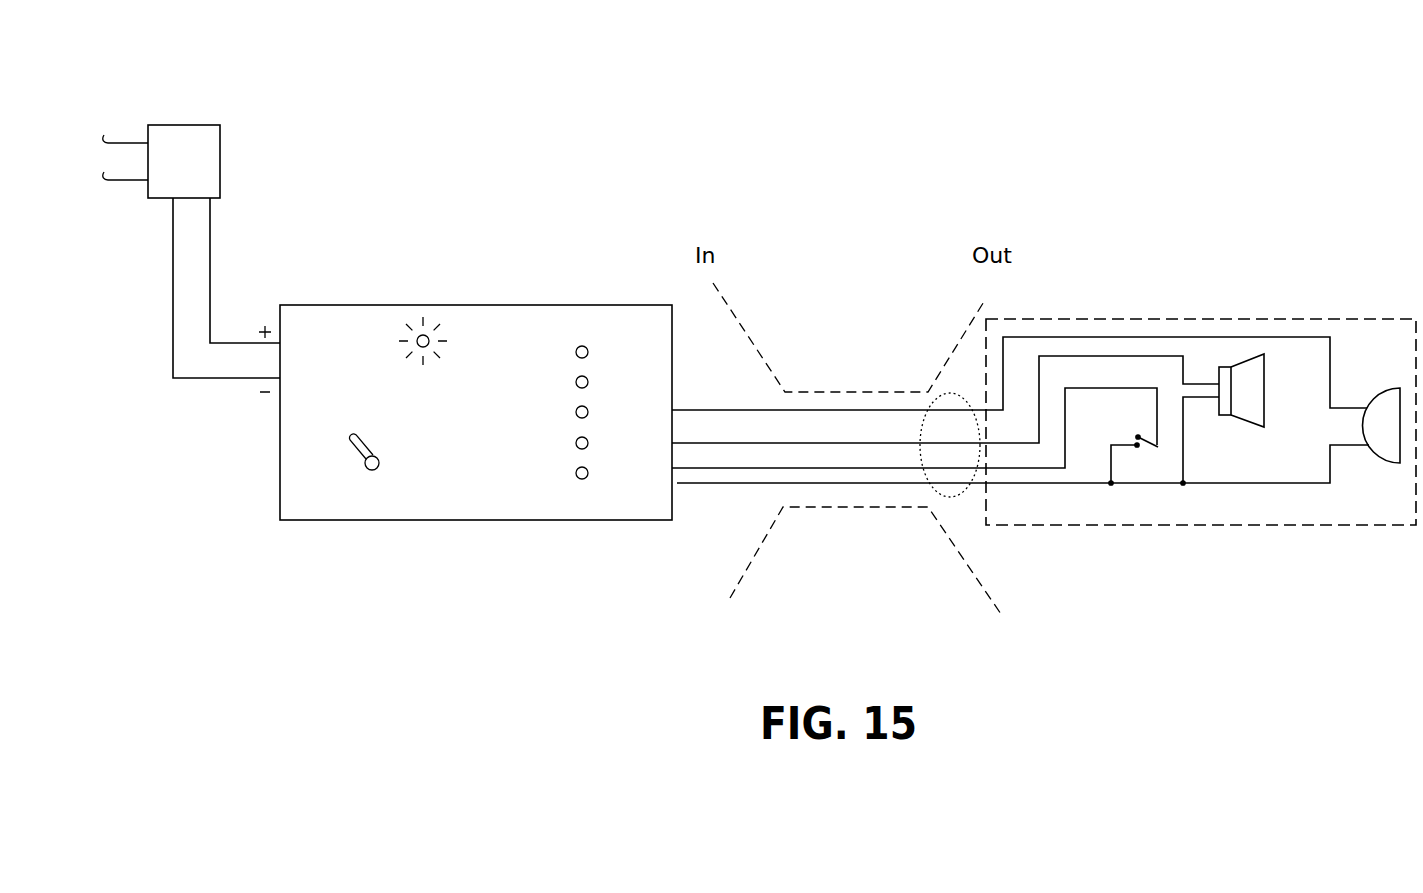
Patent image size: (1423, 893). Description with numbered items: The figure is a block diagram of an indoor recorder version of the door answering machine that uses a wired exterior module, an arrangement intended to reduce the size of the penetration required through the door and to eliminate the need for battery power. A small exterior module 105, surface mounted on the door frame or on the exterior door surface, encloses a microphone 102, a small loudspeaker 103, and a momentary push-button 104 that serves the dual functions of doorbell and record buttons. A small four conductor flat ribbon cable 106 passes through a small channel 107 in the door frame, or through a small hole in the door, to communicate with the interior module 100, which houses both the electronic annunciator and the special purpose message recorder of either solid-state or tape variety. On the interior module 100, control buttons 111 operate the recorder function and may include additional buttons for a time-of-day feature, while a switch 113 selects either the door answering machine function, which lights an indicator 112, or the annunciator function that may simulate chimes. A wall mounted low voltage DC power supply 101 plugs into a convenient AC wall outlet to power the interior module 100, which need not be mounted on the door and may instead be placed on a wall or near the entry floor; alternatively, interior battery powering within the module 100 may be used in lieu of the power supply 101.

The interior module 100 is at (603, 305).
The low voltage DC power supply 101 is at (220, 137).
The microphone 102 is at (1385, 378).
The small loudspeaker 103 is at (1247, 455).
The momentary push-button 104 is at (1143, 455).
The small exterior module 105 is at (1290, 310).
The four conductor flat ribbon cable 106 is at (942, 495).
The small channel 107 is at (787, 400).
The control buttons 111 is at (577, 485).
The indicator 112 is at (432, 322).
The switch 113 is at (378, 468).